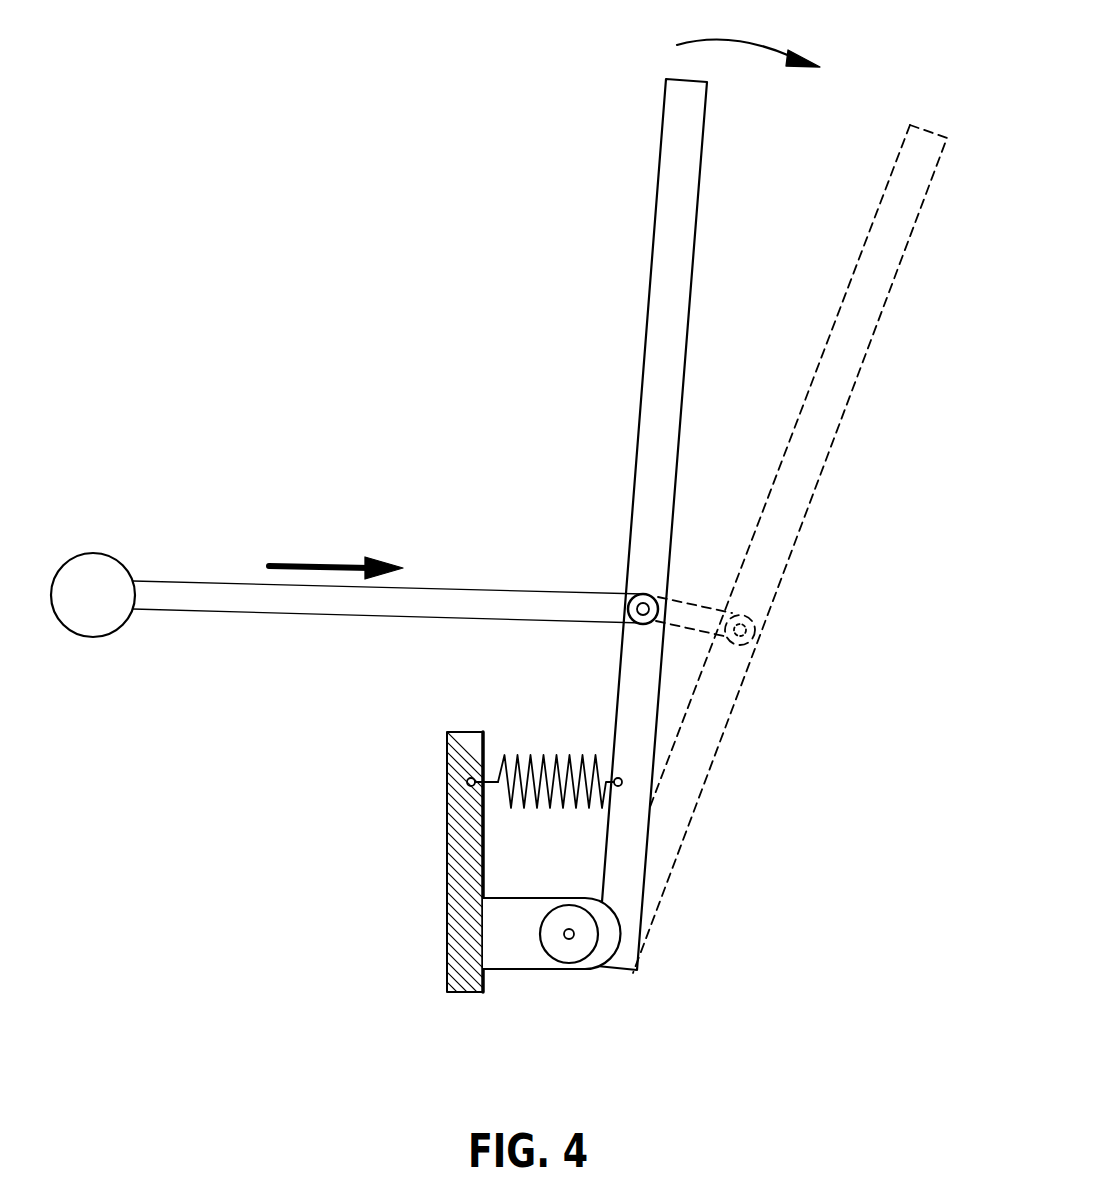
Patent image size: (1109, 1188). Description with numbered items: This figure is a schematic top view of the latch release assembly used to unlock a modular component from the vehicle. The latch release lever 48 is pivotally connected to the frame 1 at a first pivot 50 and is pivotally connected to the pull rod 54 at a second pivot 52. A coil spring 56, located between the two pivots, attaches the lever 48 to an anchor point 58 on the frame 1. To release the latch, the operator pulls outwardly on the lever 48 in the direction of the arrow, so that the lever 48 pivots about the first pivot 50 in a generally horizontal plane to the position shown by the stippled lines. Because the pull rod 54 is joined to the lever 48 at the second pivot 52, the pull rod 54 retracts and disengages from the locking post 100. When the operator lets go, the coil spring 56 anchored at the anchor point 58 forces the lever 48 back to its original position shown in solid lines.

The frame 1 is at (472, 993).
The latch release lever 48 is at (694, 220).
The first pivot 50 is at (560, 966).
The second pivot 52 is at (658, 603).
The pull rod 54 is at (367, 618).
The coil spring 56 is at (550, 755).
The anchor point 58 is at (468, 782).
The locking post 100 is at (120, 610).